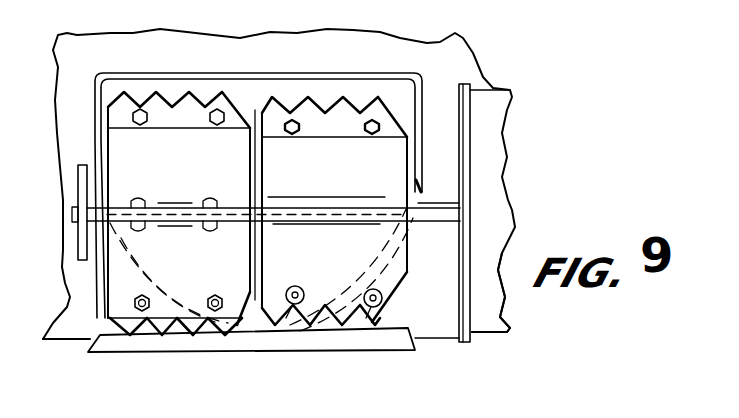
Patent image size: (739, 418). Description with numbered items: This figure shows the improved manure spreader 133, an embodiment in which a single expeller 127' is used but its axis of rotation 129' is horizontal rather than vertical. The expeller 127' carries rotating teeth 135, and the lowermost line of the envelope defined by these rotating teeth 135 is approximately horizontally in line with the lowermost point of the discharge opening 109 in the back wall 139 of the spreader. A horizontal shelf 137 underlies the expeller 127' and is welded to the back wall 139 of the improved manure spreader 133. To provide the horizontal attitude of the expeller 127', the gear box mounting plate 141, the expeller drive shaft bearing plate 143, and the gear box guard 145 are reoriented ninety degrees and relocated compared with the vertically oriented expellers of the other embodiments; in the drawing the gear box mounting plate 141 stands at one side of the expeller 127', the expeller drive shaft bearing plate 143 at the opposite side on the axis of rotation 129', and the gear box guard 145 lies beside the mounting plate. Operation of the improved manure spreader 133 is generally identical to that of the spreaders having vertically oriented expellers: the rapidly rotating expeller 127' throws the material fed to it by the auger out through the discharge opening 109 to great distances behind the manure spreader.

The discharge opening 109 is at (120, 143).
The expeller 127' is at (384, 249).
The axis of rotation 129' is at (273, 196).
The improved manure spreader 133 is at (520, 54).
The rotating teeth 135 is at (343, 113).
The horizontal shelf 137 is at (318, 339).
The back wall 139 is at (443, 50).
The gear box mounting plate 141 is at (470, 122).
The expeller drive shaft bearing plate 143 is at (80, 239).
The gear box guard 145 is at (490, 316).